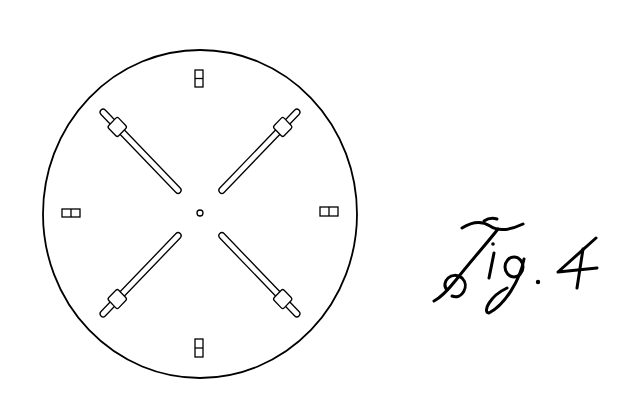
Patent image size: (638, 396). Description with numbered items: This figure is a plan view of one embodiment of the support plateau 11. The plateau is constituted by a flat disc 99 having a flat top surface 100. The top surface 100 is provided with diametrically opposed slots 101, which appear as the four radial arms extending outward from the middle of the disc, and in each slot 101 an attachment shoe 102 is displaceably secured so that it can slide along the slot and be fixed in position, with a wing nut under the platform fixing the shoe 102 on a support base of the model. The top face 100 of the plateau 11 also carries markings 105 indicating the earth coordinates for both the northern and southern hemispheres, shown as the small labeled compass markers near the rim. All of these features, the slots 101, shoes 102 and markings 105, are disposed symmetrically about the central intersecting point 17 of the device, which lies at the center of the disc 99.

The support plateau 11 is at (348, 77).
The central intersecting point 17 is at (201, 208).
The flat disc 99 is at (65, 150).
The flat top surface 100 is at (159, 226).
The diametrically opposed slots 101 is at (246, 164).
The attachment shoe 102 is at (285, 125).
The markings 105 is at (199, 69).